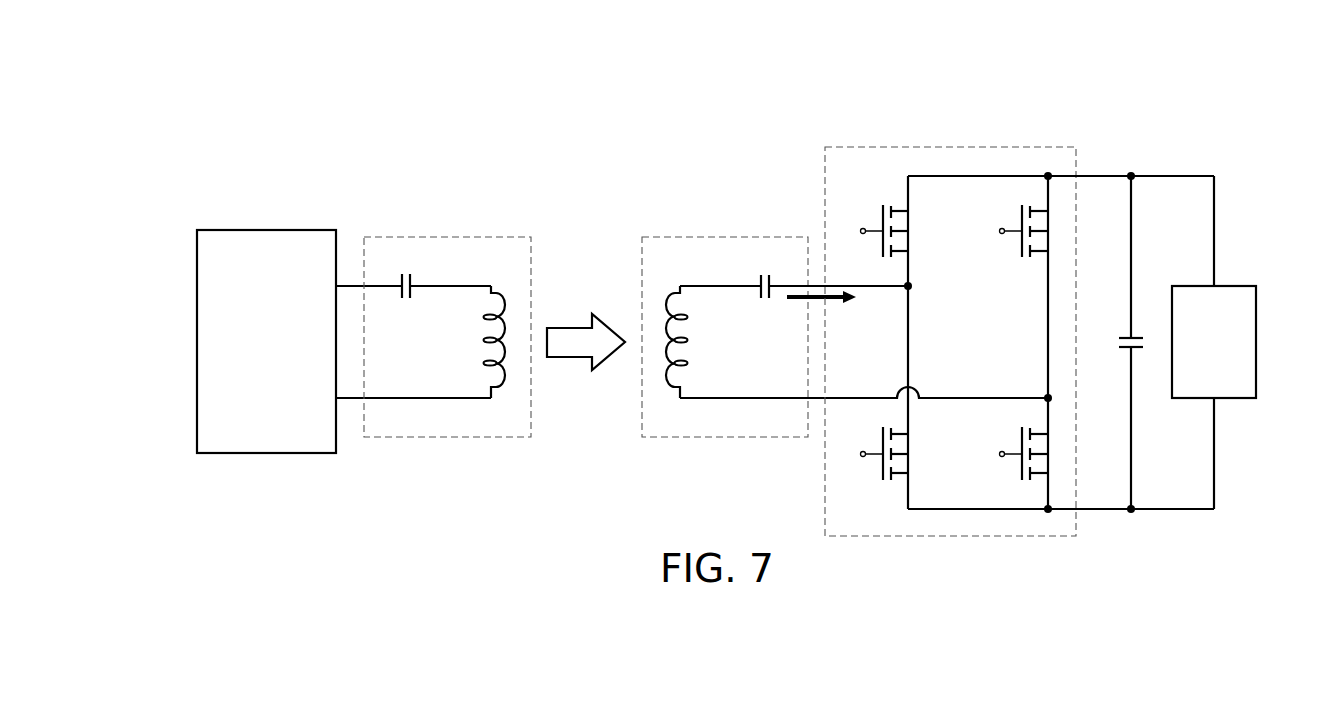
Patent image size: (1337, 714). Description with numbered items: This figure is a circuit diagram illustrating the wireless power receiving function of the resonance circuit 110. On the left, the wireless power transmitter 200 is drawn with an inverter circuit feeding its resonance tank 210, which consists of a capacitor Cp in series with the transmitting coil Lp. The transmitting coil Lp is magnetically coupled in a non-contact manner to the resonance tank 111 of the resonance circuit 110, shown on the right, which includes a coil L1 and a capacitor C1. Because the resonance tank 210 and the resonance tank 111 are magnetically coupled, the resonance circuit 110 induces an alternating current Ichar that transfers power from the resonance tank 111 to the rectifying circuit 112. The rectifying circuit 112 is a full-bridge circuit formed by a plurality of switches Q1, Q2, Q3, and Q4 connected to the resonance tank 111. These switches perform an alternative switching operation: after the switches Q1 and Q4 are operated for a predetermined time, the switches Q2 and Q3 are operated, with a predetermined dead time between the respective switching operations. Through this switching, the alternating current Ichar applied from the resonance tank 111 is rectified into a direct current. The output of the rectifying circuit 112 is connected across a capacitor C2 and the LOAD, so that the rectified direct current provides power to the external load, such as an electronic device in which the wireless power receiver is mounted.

The wireless power transmitter 200 is at (322, 154).
The resonance tank 210 is at (447, 232).
The resonance circuit 110 is at (1015, 65).
The resonance tank 111 is at (726, 232).
The rectifying circuit 112 is at (963, 147).
The switch Q1 is at (877, 228).
The switch Q2 is at (877, 451).
The switch Q3 is at (1017, 228).
The switch Q4 is at (1017, 451).
The capacitor C1 is at (729, 274).
The coil L1 is at (692, 342).
The capacitor Cp is at (444, 274).
The transmitting coil Lp is at (477, 342).
The capacitor C2 is at (1113, 342).
The load LOAD is at (1214, 342).
The alternating current Ichar is at (821, 309).